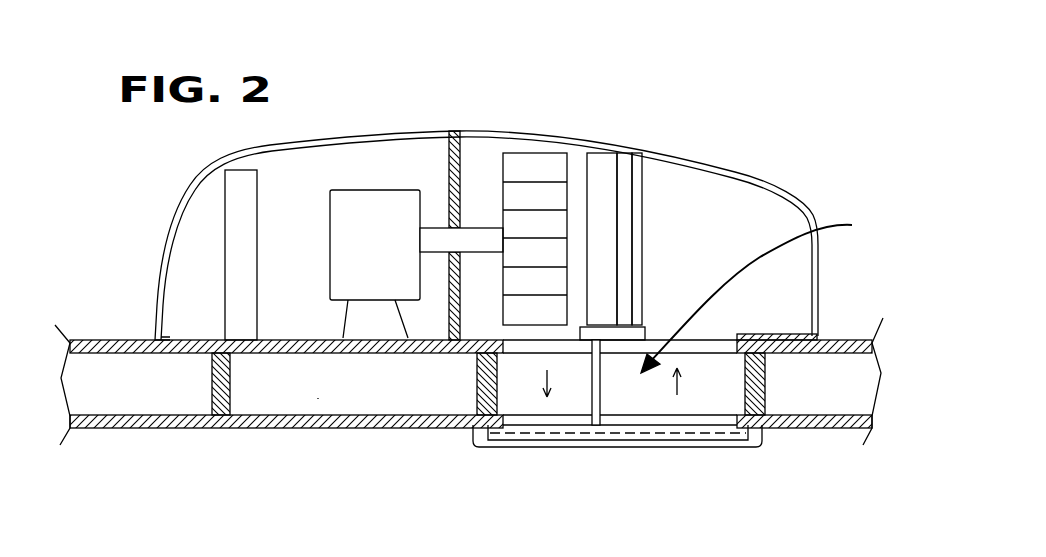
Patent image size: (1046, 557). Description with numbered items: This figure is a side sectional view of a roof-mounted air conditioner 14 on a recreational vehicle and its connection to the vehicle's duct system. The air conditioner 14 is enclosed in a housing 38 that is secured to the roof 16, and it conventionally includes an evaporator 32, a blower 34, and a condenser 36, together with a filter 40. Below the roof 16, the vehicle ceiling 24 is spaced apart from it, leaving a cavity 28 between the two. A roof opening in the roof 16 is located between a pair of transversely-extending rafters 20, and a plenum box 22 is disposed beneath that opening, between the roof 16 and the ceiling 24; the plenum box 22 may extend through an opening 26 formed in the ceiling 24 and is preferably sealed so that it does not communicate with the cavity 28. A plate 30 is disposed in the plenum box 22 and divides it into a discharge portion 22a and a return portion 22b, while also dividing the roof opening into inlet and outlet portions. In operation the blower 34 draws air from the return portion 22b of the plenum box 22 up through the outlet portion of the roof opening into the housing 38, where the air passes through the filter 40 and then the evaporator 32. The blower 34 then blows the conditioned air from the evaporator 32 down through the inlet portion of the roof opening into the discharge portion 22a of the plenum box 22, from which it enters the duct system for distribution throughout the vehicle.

The air conditioner 14 is at (410, 167).
The roof 16 is at (133, 343).
The rafters 20 is at (210, 387).
The plenum box 22 is at (765, 292).
The discharge portion 22a is at (518, 392).
The return portion 22b is at (702, 398).
The ceiling 24 is at (113, 423).
The opening 26 is at (542, 420).
The cavity 28 is at (318, 398).
The plate 30 is at (592, 397).
The evaporator 32 is at (597, 170).
The blower 34 is at (537, 167).
The condenser 36 is at (235, 212).
The housing 38 is at (713, 167).
The filter 40 is at (643, 180).